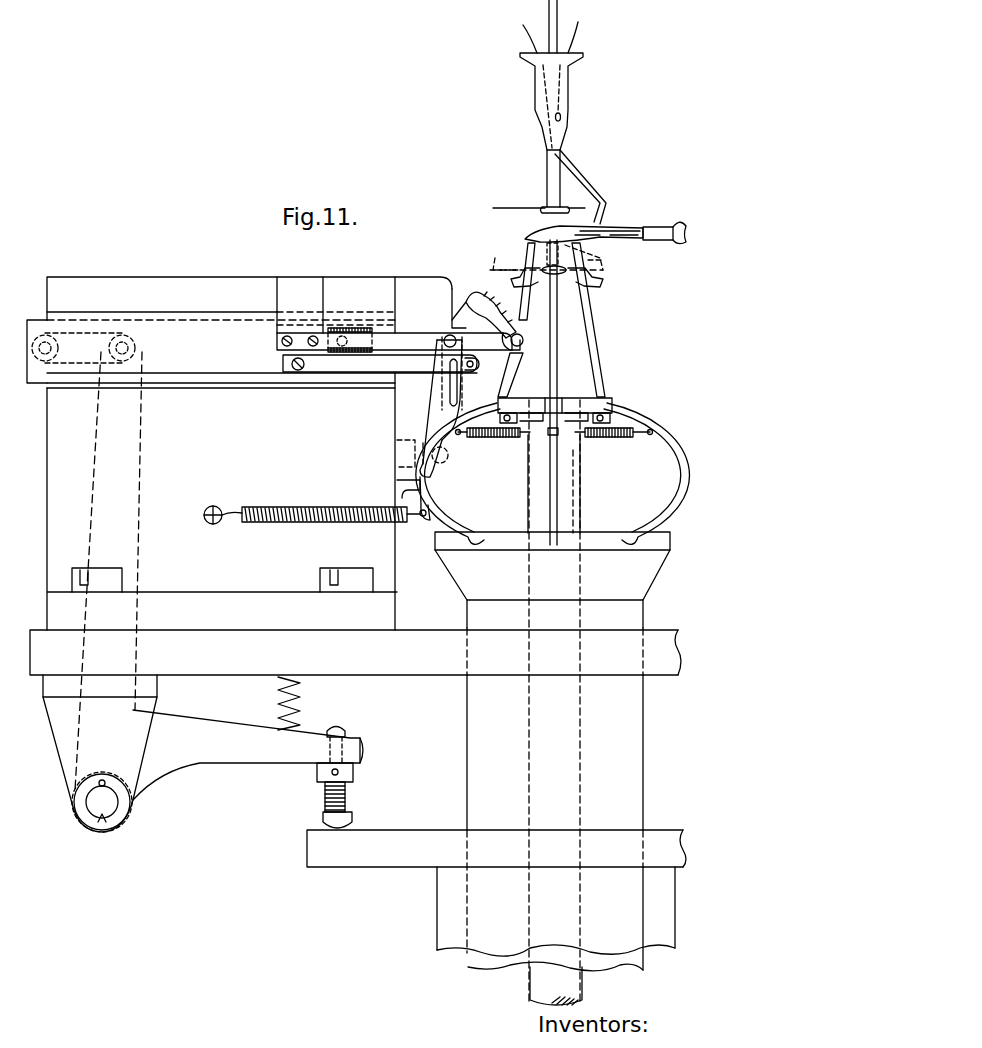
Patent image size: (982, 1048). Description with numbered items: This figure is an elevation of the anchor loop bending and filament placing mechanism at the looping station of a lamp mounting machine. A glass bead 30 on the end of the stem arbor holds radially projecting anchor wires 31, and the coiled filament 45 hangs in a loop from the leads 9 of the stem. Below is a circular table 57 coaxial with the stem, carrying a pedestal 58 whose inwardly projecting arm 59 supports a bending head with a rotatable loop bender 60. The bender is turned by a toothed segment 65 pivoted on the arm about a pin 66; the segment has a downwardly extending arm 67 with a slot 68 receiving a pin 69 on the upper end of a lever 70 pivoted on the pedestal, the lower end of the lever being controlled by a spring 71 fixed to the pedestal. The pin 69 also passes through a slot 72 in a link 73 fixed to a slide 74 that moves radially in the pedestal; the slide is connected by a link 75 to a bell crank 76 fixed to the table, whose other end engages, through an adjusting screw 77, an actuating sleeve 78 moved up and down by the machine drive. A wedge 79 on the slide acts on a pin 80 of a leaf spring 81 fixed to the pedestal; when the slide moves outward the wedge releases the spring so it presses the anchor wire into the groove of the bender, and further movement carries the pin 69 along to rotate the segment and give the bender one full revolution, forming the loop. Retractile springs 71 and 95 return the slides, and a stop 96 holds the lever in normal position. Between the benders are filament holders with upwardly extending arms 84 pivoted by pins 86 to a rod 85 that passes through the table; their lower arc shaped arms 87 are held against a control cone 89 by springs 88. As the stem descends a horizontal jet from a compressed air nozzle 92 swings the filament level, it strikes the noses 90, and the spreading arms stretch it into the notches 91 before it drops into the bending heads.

The leads 9 is at (575, 170).
The bead 30 is at (543, 207).
The anchor wires 31 is at (497, 208).
The coiled filament 45 is at (530, 232).
The circular table 57 is at (438, 672).
The pedestal 58 is at (147, 284).
The arm 59 is at (418, 282).
The loop bender 60 is at (522, 340).
The toothed segment 65 is at (473, 290).
The pin 66 is at (448, 334).
The arm 67 is at (445, 382).
The slot 68 is at (450, 398).
The pin 69 is at (445, 362).
The lever 70 is at (437, 418).
The spring 71 is at (303, 507).
The slot 72 is at (479, 360).
The link 73 is at (478, 368).
The slide 74 is at (40, 383).
The link 75 is at (85, 367).
The bell crank 76 is at (226, 757).
The adjusting screw 77 is at (347, 805).
The actuating sleeve 78 is at (422, 832).
The wedge 79 is at (350, 328).
The pin 80 is at (347, 341).
The leaf spring 81 is at (397, 337).
The filament holder arms 84 is at (590, 315).
The rod 85 is at (567, 500).
The pins 86 is at (612, 402).
The arc shaped arms 87 is at (455, 523).
The springs 88 is at (495, 438).
The control cone 89 is at (650, 577).
The noses 90 is at (520, 283).
The notches 91 is at (530, 265).
The compressed air nozzle 92 is at (650, 227).
The spring 95 is at (303, 702).
The stop 96 is at (398, 486).